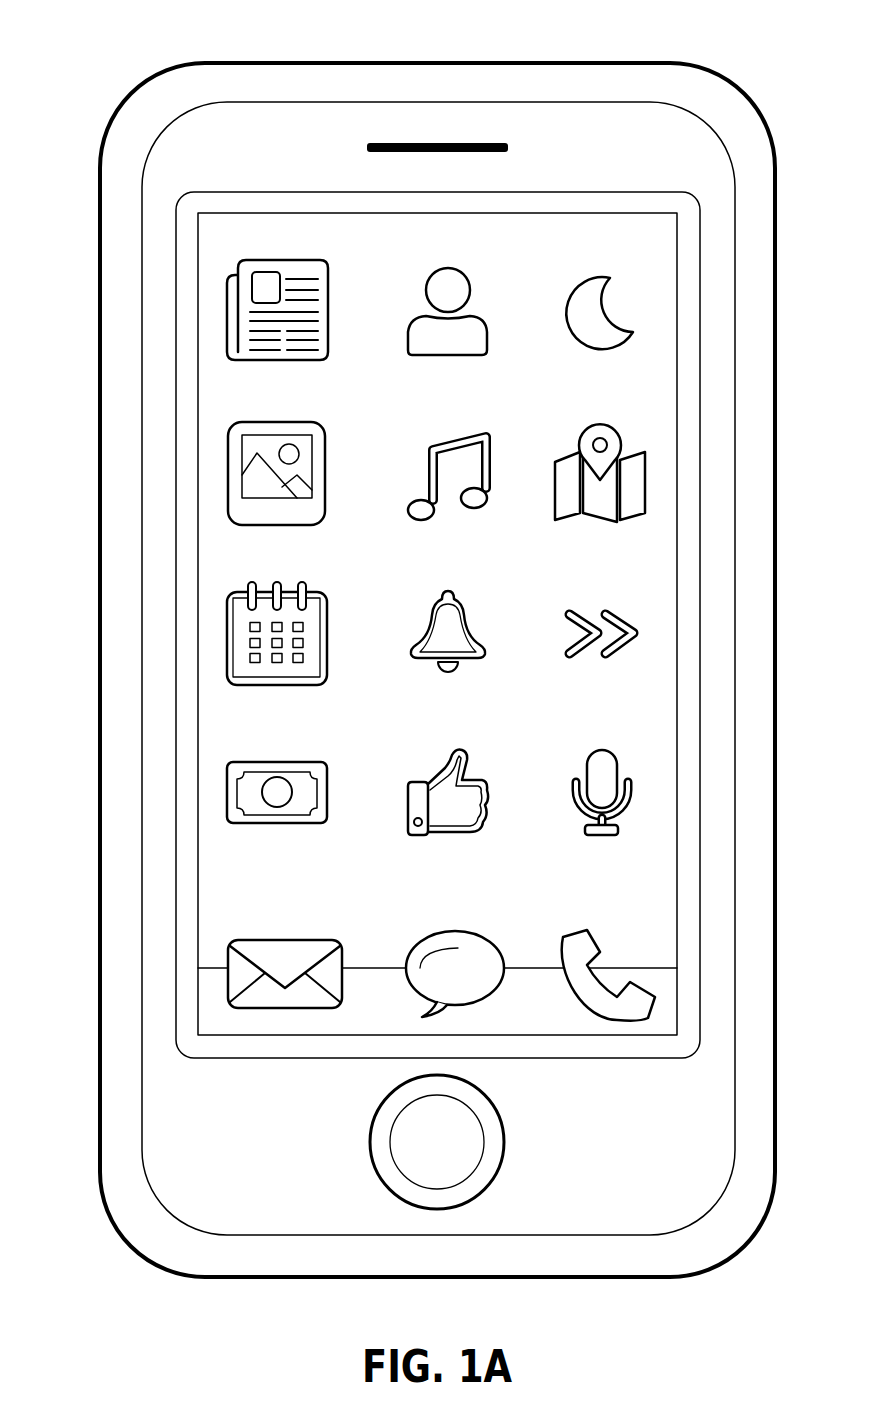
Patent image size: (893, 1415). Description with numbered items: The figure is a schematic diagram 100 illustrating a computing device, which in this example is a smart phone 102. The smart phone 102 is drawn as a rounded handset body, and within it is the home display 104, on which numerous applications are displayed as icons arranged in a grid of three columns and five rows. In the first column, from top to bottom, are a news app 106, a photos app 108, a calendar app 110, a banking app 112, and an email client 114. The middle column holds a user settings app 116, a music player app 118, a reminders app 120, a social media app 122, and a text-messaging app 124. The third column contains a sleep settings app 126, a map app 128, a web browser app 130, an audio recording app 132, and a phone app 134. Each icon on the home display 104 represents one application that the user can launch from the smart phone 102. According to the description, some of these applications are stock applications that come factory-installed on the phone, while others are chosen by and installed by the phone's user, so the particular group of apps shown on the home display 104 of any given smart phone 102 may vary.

The schematic diagram 100 is at (96, 75).
The smart phone 102 is at (100, 177).
The home display 104 is at (155, 295).
The news app 106 is at (328, 270).
The photos app 108 is at (322, 430).
The calendar app 110 is at (328, 604).
The banking app 112 is at (323, 762).
The email client 114 is at (335, 940).
The user settings app 116 is at (468, 272).
The music player app 118 is at (470, 430).
The reminders app 120 is at (462, 605).
The social media app 122 is at (465, 752).
The text-messaging app 124 is at (472, 933).
The sleep settings app 126 is at (612, 276).
The map app 128 is at (610, 425).
The web browser app 130 is at (612, 600).
The audio recording app 132 is at (612, 750).
The phone app 134 is at (593, 940).